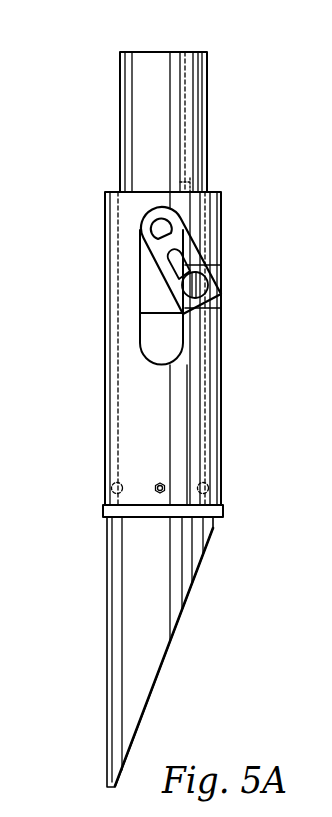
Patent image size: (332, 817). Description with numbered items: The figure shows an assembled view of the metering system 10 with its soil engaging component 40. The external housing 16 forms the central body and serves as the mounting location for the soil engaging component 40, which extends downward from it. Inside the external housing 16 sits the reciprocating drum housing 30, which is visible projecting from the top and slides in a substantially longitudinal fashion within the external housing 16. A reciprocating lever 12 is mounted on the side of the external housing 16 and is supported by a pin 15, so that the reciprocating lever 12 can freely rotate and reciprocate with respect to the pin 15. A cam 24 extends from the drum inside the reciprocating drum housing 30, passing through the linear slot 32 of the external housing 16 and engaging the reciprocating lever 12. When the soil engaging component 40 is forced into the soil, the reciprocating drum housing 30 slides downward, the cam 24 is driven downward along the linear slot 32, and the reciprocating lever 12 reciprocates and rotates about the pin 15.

The metering system 10 is at (106, 67).
The reciprocating drum housing 30 is at (120, 103).
The external housing 16 is at (104, 393).
The linear slot 32 is at (145, 333).
The reciprocating lever 12 is at (222, 295).
The cam 24 is at (159, 228).
The pin 15 is at (199, 284).
The soil engaging component 40 is at (107, 622).